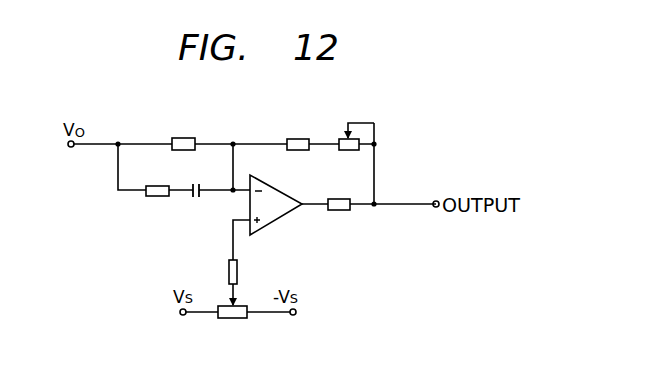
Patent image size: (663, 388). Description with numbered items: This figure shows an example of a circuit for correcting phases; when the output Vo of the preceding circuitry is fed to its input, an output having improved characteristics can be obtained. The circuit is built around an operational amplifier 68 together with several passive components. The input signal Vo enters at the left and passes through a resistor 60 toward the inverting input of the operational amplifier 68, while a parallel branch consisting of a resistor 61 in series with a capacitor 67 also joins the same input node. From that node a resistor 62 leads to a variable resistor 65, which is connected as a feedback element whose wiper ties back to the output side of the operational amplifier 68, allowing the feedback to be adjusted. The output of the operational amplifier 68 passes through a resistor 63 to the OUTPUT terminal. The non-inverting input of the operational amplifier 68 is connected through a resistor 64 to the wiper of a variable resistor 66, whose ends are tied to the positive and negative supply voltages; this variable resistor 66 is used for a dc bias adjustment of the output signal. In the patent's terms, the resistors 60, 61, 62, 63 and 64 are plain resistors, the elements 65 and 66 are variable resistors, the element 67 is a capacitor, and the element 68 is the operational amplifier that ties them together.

The resistor 60 is at (183, 137).
The resistor 61 is at (154, 197).
The resistor 62 is at (294, 138).
The resistor 63 is at (339, 211).
The resistor 64 is at (238, 270).
The variable resistor 65 is at (355, 152).
The variable resistor 66 is at (233, 320).
The capacitor 67 is at (196, 198).
The operational amplifier 68 is at (281, 223).